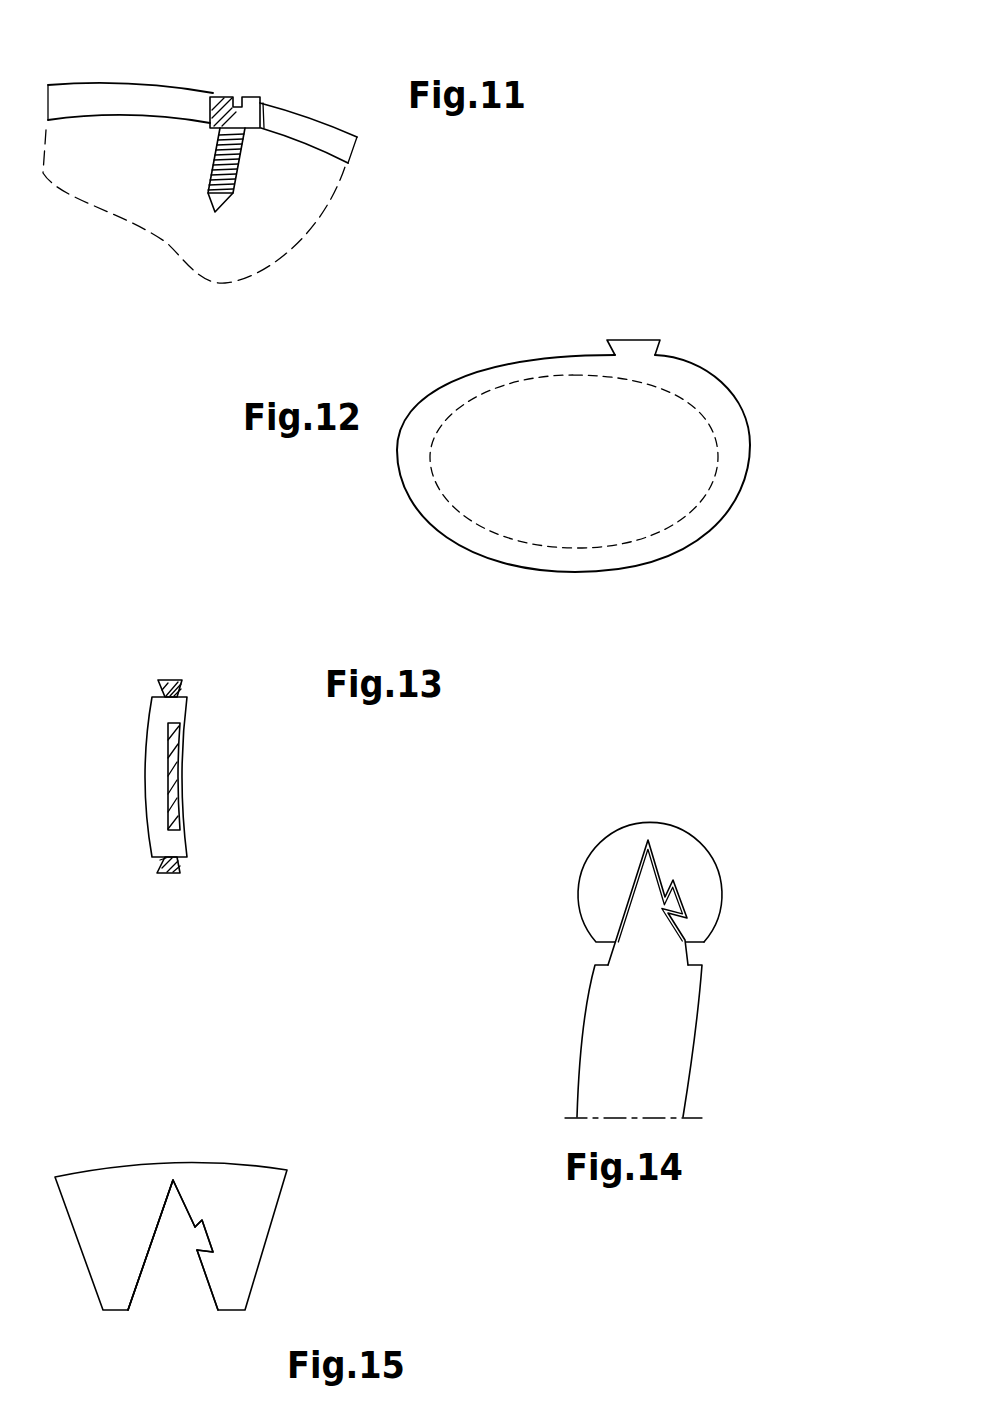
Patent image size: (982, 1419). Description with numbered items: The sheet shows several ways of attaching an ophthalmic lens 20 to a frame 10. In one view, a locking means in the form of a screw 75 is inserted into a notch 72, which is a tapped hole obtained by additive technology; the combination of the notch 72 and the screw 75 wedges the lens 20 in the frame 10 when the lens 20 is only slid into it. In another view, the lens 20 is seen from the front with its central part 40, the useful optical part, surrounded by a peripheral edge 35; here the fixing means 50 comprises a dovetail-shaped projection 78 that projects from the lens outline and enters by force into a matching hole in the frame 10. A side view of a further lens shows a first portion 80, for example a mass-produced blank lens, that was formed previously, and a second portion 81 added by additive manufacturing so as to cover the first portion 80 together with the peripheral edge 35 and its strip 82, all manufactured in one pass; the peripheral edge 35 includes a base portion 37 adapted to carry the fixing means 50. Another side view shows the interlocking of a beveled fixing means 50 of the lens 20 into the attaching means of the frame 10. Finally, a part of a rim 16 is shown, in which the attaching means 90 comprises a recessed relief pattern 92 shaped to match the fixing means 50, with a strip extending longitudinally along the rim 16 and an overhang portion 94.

In FIG. 11, the frame 10 is at (293, 108).
In FIG. 14, the frame 10 is at (698, 872).
In FIG. 11, the screw 75 is at (227, 97).
In FIG. 11, the notch 72 is at (252, 170).
In FIG. 11, the ophthalmic lens 20 is at (150, 163).
In FIG. 12, the ophthalmic lens 20 is at (618, 417).
In FIG. 14, the ophthalmic lens 20 is at (682, 962).
In FIG. 12, the projection 78 is at (640, 345).
In FIG. 12, the peripheral edge 35 is at (579, 417).
In FIG. 13, the peripheral edge 35 is at (171, 776).
In FIG. 12, the central part 40 is at (682, 442).
In FIG. 13, the central part 40 is at (198, 776).
In FIG. 13, the strip 82 is at (170, 680).
In FIG. 13, the base portion 37 is at (185, 685).
In FIG. 13, the second portion 81 is at (155, 773).
In FIG. 13, the first portion 80 is at (172, 738).
In FIG. 14, the fixing means 50 is at (660, 932).
In FIG. 15, the rim 16 is at (218, 1224).
In FIG. 15, the relief pattern 92 is at (173, 1203).
In FIG. 15, the overhang portion 94 is at (200, 1227).
In FIG. 15, the attaching means 90 is at (183, 1265).